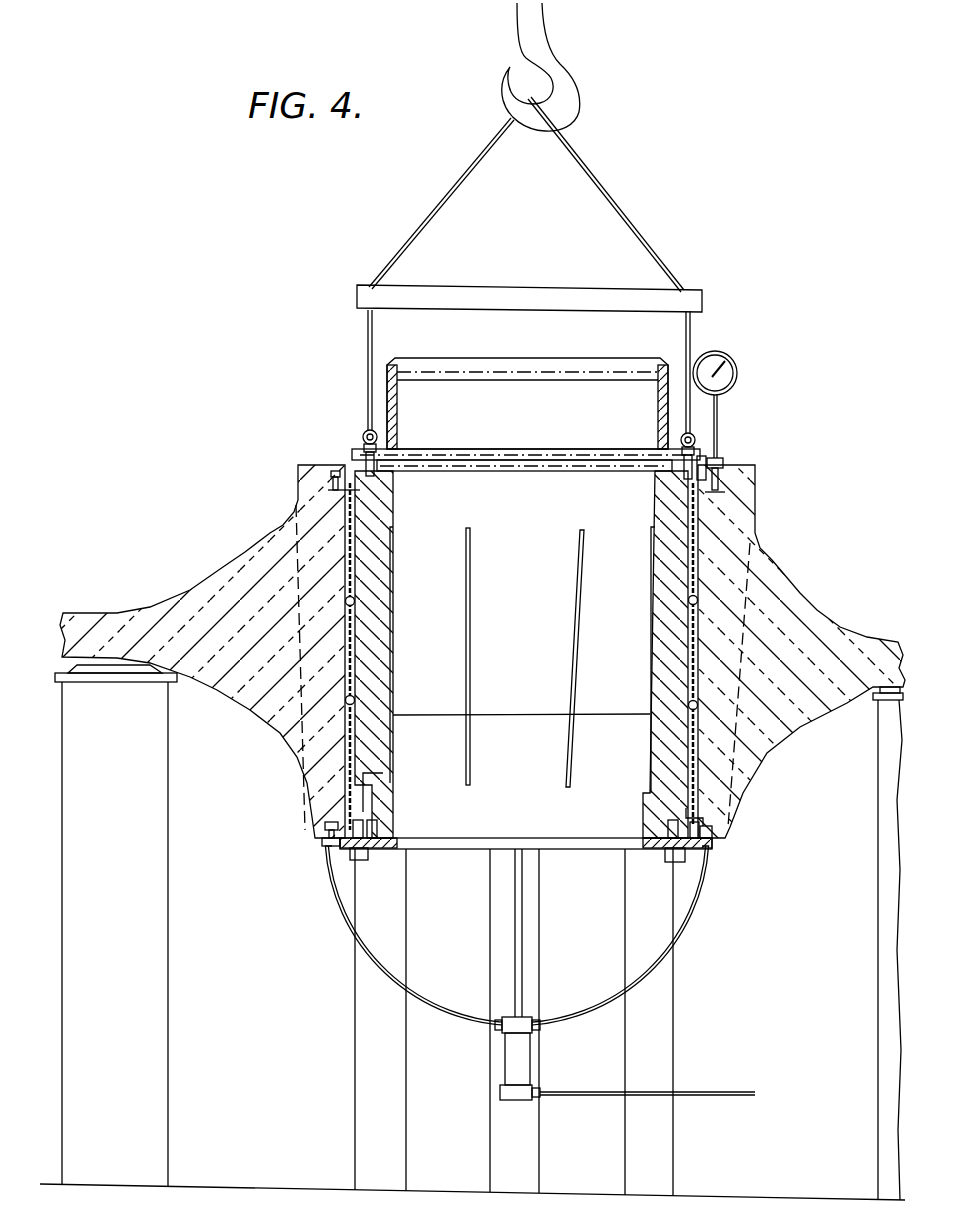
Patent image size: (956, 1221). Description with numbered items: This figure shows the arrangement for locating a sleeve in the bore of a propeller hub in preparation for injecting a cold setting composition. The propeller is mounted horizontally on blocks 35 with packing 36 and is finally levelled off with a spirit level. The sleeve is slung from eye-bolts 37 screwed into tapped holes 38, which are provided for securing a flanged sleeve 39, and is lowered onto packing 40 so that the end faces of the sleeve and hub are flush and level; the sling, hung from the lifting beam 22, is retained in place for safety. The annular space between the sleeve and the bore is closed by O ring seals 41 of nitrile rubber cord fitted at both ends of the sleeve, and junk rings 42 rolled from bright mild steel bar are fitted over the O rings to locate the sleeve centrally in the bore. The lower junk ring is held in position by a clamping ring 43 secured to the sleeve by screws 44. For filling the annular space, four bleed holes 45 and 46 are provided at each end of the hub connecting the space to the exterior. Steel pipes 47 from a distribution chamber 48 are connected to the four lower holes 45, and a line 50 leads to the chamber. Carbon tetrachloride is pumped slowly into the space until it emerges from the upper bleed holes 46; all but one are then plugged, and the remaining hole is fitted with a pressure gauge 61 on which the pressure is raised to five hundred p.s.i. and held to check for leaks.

The lifting beam 22 is at (587, 288).
The blocks 35 is at (158, 724).
The packing 36 is at (115, 665).
The eye-bolts 37 is at (362, 434).
The tapped holes 38 is at (378, 471).
The flanged sleeve 39 is at (463, 364).
The packing 40 is at (535, 978).
The O ring seals 41 is at (727, 474).
The junk rings 42 is at (708, 462).
The clamping ring 43 is at (384, 852).
The screws 44 is at (357, 854).
The bleed holes 45 is at (378, 808).
The bleed holes 46 is at (326, 486).
The steel pipes 47 is at (382, 972).
The distribution chamber 48 is at (516, 1048).
The line 50 is at (722, 1091).
The pressure gauge 61 is at (738, 371).